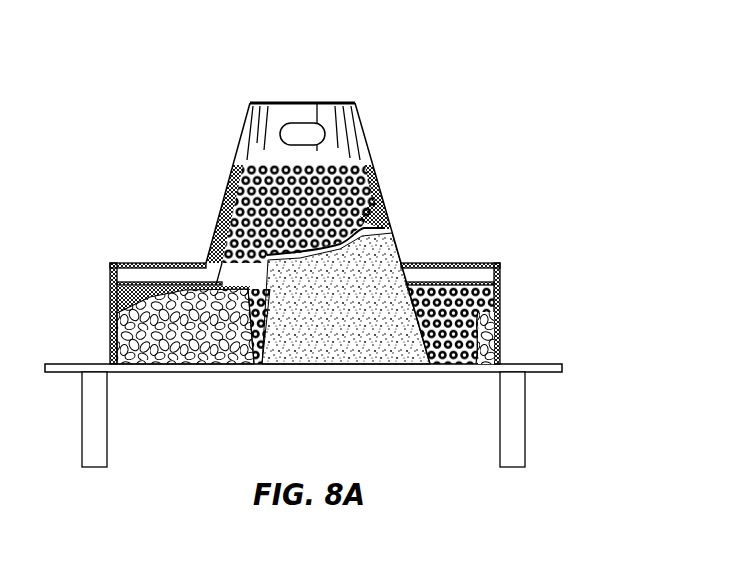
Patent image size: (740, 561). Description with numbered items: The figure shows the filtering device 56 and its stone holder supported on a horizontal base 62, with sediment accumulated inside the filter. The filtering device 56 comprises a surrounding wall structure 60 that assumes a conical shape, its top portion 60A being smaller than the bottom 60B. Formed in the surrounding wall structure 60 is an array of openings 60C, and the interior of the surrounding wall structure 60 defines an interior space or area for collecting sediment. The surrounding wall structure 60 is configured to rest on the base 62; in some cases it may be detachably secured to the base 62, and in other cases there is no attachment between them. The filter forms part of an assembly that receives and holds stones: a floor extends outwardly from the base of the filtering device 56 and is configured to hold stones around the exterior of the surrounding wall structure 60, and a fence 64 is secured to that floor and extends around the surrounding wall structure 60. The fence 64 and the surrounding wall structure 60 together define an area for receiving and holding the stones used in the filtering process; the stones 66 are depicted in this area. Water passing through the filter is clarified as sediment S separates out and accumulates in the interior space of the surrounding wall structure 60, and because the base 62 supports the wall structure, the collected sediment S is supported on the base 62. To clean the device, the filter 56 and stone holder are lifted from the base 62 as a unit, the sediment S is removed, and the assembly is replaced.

The filtering device 56 is at (442, 139).
The surrounding wall structure 60 is at (188, 204).
The top portion 60A is at (347, 101).
The bottom 60B is at (427, 366).
The array of openings 60C is at (384, 206).
The horizontal base 62 is at (212, 367).
The fence 64 is at (497, 315).
The gravel 66 is at (162, 324).
The sediment S is at (345, 347).